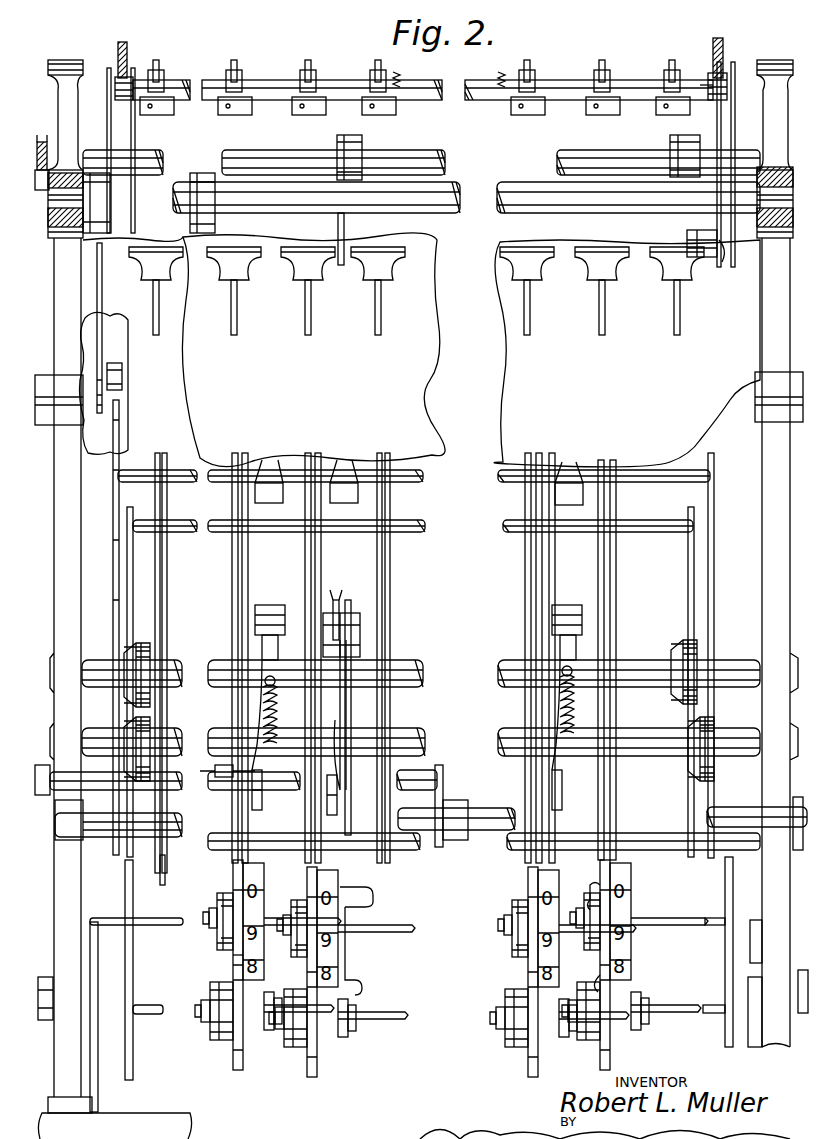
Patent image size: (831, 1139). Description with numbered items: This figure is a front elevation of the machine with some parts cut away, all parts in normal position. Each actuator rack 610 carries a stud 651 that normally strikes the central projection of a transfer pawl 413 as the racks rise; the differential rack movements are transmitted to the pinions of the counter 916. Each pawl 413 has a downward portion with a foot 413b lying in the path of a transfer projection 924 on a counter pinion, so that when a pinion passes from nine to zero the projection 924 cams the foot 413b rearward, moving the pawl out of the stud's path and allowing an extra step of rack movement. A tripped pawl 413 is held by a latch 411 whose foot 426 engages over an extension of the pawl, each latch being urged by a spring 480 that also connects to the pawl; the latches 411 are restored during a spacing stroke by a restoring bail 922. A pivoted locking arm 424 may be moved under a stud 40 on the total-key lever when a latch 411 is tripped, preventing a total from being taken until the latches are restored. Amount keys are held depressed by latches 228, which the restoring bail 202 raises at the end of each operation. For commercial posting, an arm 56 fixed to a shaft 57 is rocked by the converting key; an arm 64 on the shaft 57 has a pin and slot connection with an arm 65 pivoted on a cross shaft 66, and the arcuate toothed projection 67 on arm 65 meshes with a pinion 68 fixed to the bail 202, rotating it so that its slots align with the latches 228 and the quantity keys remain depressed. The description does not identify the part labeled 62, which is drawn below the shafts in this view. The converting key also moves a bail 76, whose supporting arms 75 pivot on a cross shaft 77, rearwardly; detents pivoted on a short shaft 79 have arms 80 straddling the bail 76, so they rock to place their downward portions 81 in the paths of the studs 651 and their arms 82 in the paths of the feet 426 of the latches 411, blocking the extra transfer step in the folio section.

The arm 56 is at (38, 160).
The shaft 57 is at (557, 155).
The stem 62 is at (344, 226).
The arm 64 is at (687, 234).
The arm 65 is at (722, 260).
The cross shaft 66 is at (497, 200).
The lateral arcuate projection 67 is at (721, 57).
The pinion 68 is at (713, 90).
The stud 40 is at (122, 378).
The locking arm 424 is at (118, 428).
The latch 411 is at (197, 479).
The restoring bail 922 is at (197, 533).
The restoring bail 202 is at (343, 92).
The latch 228 is at (166, 114).
The foot 426 is at (262, 645).
The spring 480 is at (263, 715).
The downwardly projecting portion 81 is at (257, 742).
The arm 82 is at (340, 612).
The short shaft 79 is at (367, 632).
The pawl 413 is at (347, 707).
The stud 651 is at (240, 778).
The arm 75 is at (60, 798).
The bail 76 is at (200, 785).
The cross shaft 77 is at (490, 817).
The arm 80 is at (257, 795).
The actuator rack 610 is at (163, 870).
The transfer projection 924 is at (222, 896).
The counter 916 is at (235, 959).
The foot 413b is at (373, 898).